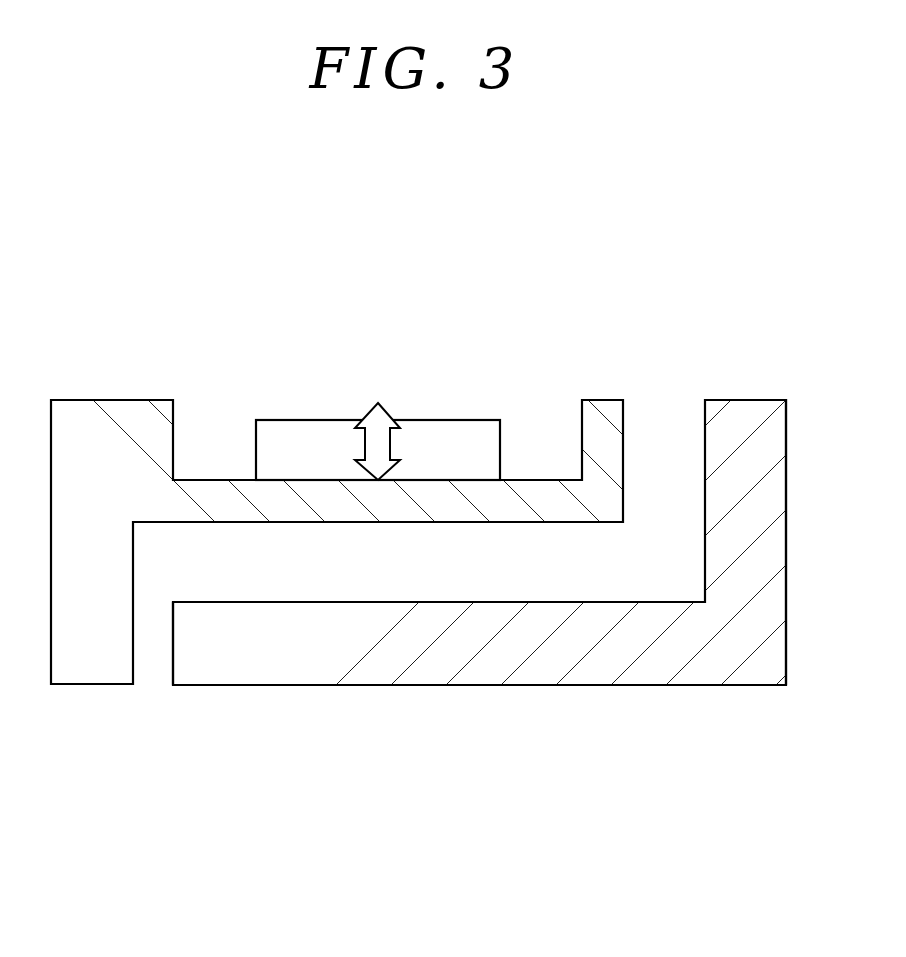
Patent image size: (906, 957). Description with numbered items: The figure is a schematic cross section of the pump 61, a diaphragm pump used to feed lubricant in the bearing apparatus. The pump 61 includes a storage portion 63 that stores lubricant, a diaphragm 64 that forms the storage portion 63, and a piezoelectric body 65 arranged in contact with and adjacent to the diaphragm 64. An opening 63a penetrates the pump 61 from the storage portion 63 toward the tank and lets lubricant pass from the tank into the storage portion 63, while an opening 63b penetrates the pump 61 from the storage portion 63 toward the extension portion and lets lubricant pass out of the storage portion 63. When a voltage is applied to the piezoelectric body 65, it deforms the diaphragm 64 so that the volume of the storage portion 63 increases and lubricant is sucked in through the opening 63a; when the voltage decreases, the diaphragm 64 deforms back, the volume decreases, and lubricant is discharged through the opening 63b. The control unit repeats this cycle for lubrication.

The pump 61 is at (558, 342).
The storage portion 63 is at (542, 567).
The opening 63a is at (677, 400).
The opening 63b is at (155, 692).
The diaphragm 64 is at (213, 495).
The piezoelectric body 65 is at (312, 443).